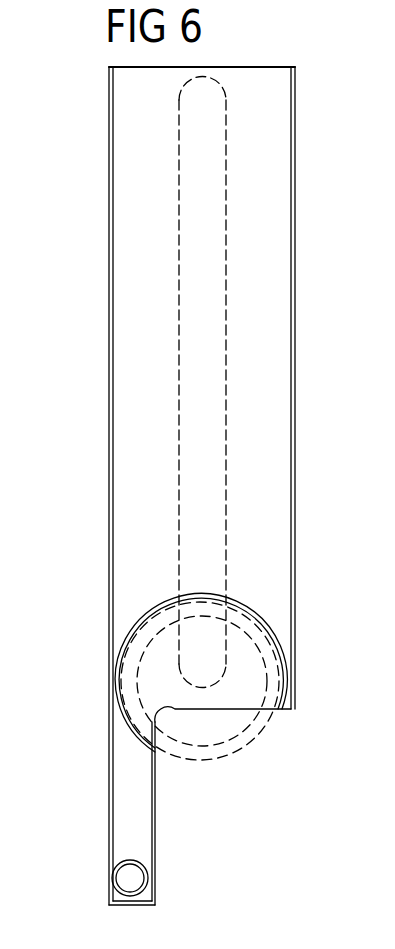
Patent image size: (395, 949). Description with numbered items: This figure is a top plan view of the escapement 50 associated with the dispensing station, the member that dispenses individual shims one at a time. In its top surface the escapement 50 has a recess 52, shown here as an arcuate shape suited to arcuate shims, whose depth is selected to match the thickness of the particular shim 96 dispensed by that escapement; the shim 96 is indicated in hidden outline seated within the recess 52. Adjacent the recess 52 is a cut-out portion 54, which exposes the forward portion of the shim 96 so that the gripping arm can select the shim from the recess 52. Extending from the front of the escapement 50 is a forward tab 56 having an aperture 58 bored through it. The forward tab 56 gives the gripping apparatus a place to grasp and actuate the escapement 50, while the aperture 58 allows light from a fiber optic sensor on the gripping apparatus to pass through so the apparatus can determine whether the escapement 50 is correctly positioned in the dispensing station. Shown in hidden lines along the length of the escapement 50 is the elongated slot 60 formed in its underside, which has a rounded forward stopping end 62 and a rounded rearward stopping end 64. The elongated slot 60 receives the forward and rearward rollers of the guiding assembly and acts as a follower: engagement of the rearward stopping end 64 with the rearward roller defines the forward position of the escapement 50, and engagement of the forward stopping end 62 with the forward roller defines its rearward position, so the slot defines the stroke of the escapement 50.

The escapement 50 is at (128, 349).
The recess 52 is at (253, 690).
The cut-out portion 54 is at (287, 746).
The forward tab 56 is at (122, 801).
The aperture 58 is at (135, 877).
The elongated slot 60 is at (210, 280).
The forward stopping end 62 is at (207, 685).
The rearward stopping end 64 is at (205, 80).
The shim 96 is at (205, 757).